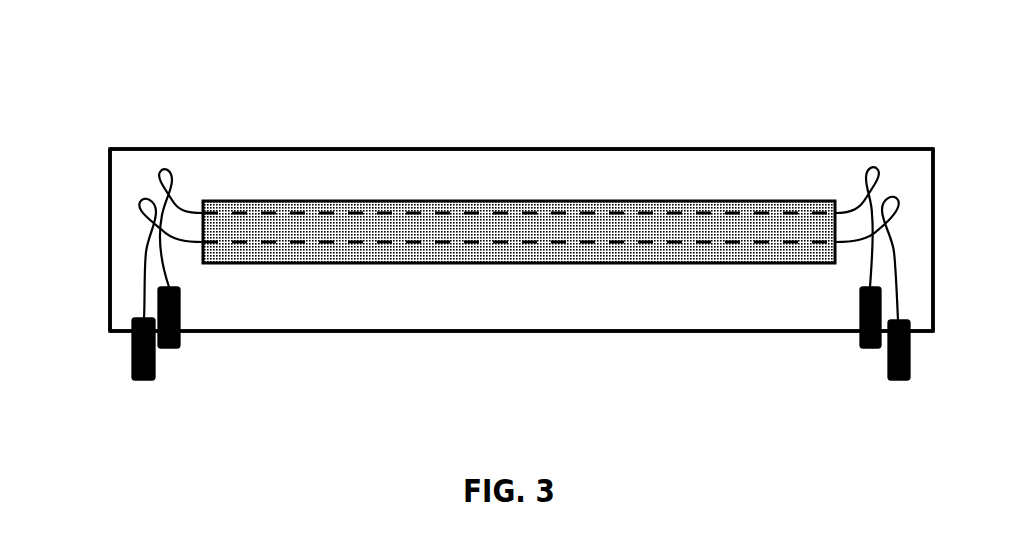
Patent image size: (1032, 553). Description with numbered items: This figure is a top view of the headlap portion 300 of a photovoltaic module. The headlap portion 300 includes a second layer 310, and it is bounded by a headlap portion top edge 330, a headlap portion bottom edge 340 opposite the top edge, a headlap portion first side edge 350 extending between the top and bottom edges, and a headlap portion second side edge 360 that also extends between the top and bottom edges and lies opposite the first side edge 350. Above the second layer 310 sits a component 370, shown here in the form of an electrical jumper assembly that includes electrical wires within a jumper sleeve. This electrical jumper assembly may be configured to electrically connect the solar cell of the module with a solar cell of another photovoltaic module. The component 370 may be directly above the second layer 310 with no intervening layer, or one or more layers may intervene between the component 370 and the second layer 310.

The headlap portion 300 is at (474, 225).
The second layer 310 is at (521, 286).
The headlap portion top edge 330 is at (521, 123).
The headlap portion bottom edge 340 is at (521, 380).
The headlap portion first side edge 350 is at (63, 240).
The headlap portion second side edge 360 is at (863, 210).
The component 370 is at (521, 230).